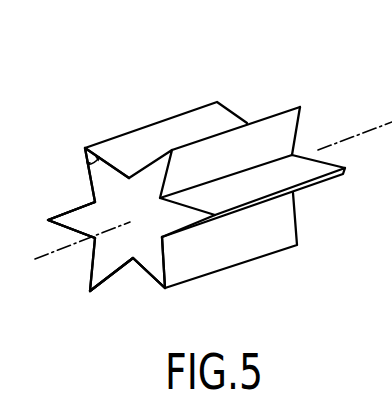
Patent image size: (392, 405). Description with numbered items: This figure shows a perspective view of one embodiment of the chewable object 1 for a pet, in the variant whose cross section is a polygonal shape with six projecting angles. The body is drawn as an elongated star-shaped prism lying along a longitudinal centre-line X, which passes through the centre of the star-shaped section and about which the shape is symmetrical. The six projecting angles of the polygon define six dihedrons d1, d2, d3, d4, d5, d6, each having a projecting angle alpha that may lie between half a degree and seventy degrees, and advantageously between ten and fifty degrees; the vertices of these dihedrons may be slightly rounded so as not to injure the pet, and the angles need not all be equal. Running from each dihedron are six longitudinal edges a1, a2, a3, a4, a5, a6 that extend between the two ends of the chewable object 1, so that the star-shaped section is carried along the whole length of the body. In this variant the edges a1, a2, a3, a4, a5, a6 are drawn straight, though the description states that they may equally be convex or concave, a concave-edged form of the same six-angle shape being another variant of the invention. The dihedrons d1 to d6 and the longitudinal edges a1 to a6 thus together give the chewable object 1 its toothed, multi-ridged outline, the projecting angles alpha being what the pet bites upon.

The chewable object 1 is at (151, 64).
The longitudinal edge a1 is at (128, 133).
The longitudinal edge a2 is at (266, 116).
The longitudinal edge a3 is at (313, 187).
The longitudinal edge a4 is at (222, 269).
The longitudinal edge a5 is at (121, 289).
The longitudinal edge a6 is at (50, 222).
The dihedron d1 is at (80, 182).
The dihedron d2 is at (306, 122).
The dihedron d3 is at (354, 163).
The dihedron d4 is at (153, 297).
The dihedron d5 is at (82, 276).
The dihedron d6 is at (52, 206).
The longitudinal axis X is at (205, 190).